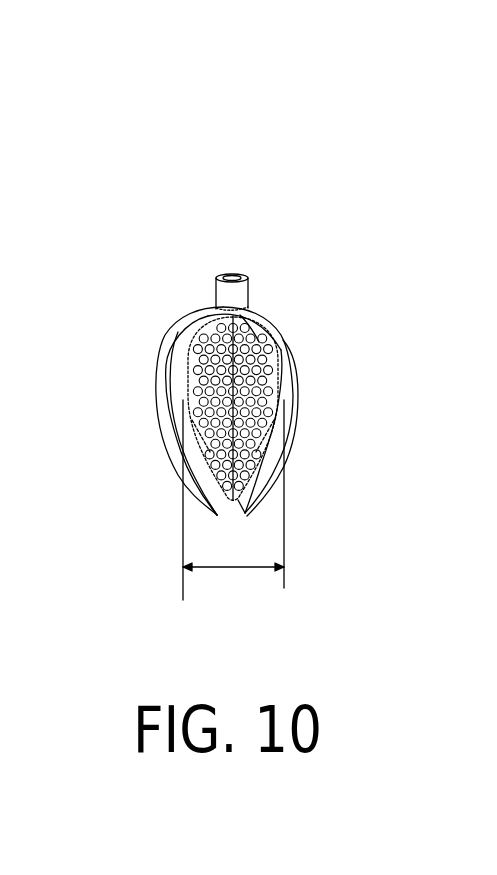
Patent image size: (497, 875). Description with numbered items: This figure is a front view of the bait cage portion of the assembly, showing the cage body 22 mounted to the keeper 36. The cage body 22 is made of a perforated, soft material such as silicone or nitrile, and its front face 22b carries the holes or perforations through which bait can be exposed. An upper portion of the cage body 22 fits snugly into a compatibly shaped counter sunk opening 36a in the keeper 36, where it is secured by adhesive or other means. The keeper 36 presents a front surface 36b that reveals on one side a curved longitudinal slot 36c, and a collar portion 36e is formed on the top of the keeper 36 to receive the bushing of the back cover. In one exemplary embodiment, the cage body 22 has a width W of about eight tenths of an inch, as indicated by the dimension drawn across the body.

The keeper 36 is at (185, 315).
The counter sunk opening 36a is at (272, 318).
The front surface 36b is at (198, 485).
The curved longitudinal slot 36c is at (160, 351).
The collar portion 36e is at (218, 273).
The cage body 22 is at (217, 447).
The front face 22b is at (207, 382).
The width W is at (233, 507).